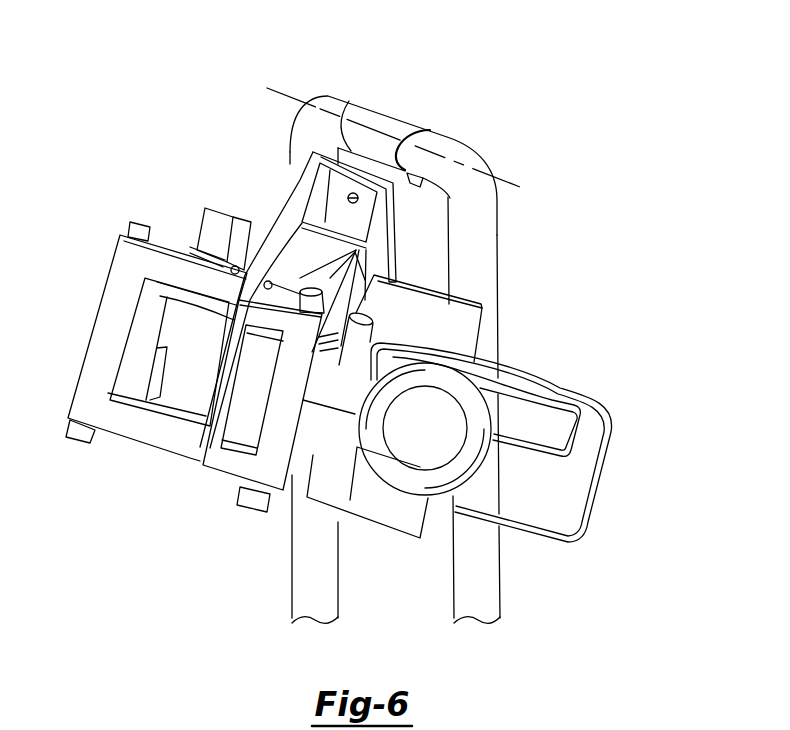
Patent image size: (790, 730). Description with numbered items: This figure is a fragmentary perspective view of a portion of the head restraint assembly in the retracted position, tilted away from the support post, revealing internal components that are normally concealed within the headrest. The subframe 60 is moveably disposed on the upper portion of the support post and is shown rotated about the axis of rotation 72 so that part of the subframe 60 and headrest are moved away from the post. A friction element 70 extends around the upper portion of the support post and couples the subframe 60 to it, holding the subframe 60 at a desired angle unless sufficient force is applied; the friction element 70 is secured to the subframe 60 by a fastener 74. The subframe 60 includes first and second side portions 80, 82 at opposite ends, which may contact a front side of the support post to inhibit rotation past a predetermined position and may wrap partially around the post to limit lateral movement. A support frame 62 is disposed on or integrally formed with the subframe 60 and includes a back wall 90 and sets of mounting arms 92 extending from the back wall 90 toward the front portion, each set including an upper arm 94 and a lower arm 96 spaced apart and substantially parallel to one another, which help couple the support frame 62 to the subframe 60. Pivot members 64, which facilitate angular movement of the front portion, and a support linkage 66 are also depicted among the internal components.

The subframe 60 is at (427, 230).
The support frame 62 is at (524, 461).
The pivot member 64 is at (102, 285).
The support linkage 66 is at (187, 380).
The friction element 70 is at (383, 118).
The axis of rotation 72 is at (292, 106).
The fastener 74 is at (349, 197).
The first side portion 80 is at (207, 223).
The second side portion 82 is at (470, 323).
The back wall 90 is at (600, 496).
The set of mounting arms 92 is at (600, 412).
The upper arm 94 is at (523, 392).
The lower arm 96 is at (538, 540).